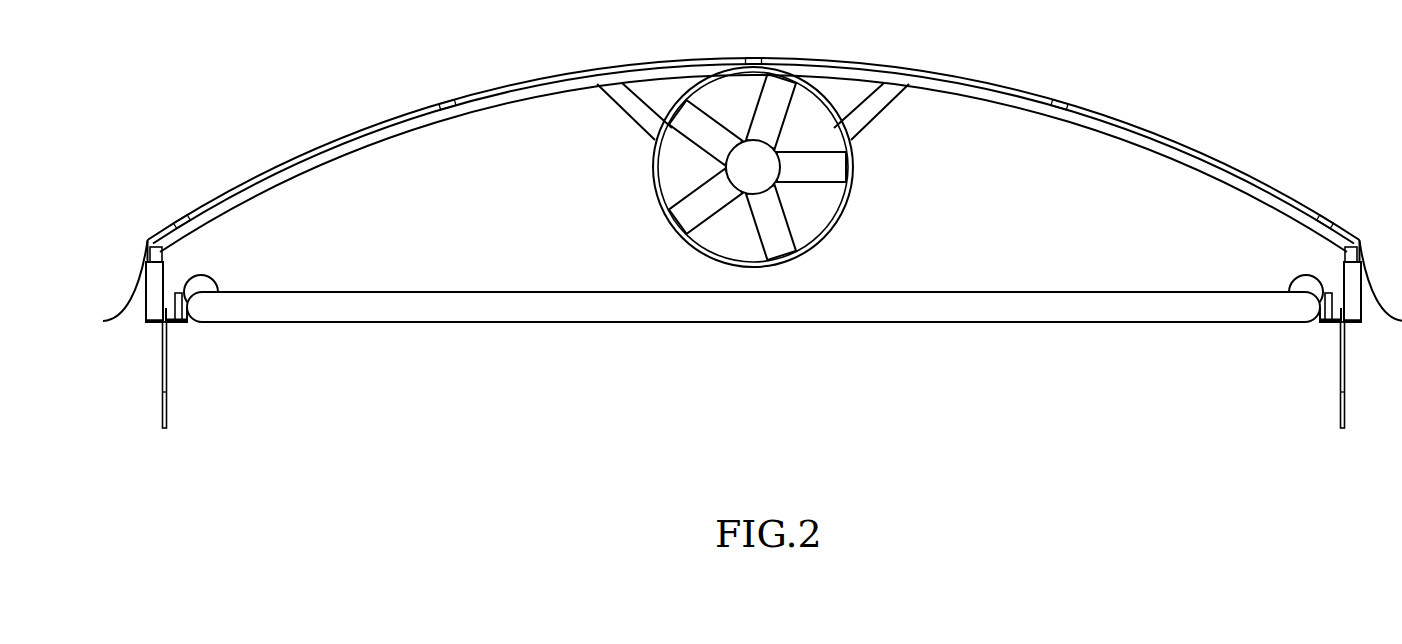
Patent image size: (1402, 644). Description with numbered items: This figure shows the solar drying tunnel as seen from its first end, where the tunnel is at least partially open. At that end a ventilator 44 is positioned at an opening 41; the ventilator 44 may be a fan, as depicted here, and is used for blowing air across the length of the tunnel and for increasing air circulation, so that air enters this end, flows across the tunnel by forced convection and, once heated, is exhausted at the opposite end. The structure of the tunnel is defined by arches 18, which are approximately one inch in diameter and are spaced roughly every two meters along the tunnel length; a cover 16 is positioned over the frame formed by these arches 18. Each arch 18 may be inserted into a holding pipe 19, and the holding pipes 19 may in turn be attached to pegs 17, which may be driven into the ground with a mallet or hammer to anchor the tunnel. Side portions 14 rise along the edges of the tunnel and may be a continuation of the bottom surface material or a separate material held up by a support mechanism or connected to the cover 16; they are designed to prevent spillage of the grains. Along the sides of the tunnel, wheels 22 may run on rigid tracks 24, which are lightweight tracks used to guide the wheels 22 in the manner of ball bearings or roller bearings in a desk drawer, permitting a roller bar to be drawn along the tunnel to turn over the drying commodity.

The side portions 14 is at (201, 289).
The cover 16 is at (252, 177).
The pegs 17 is at (162, 407).
The arches 18 is at (372, 141).
The holding pipes 19 is at (147, 307).
The wheels 22 is at (180, 292).
The rigid tracks 24 is at (175, 323).
The opening 41 is at (672, 177).
The ventilator 44 is at (703, 255).